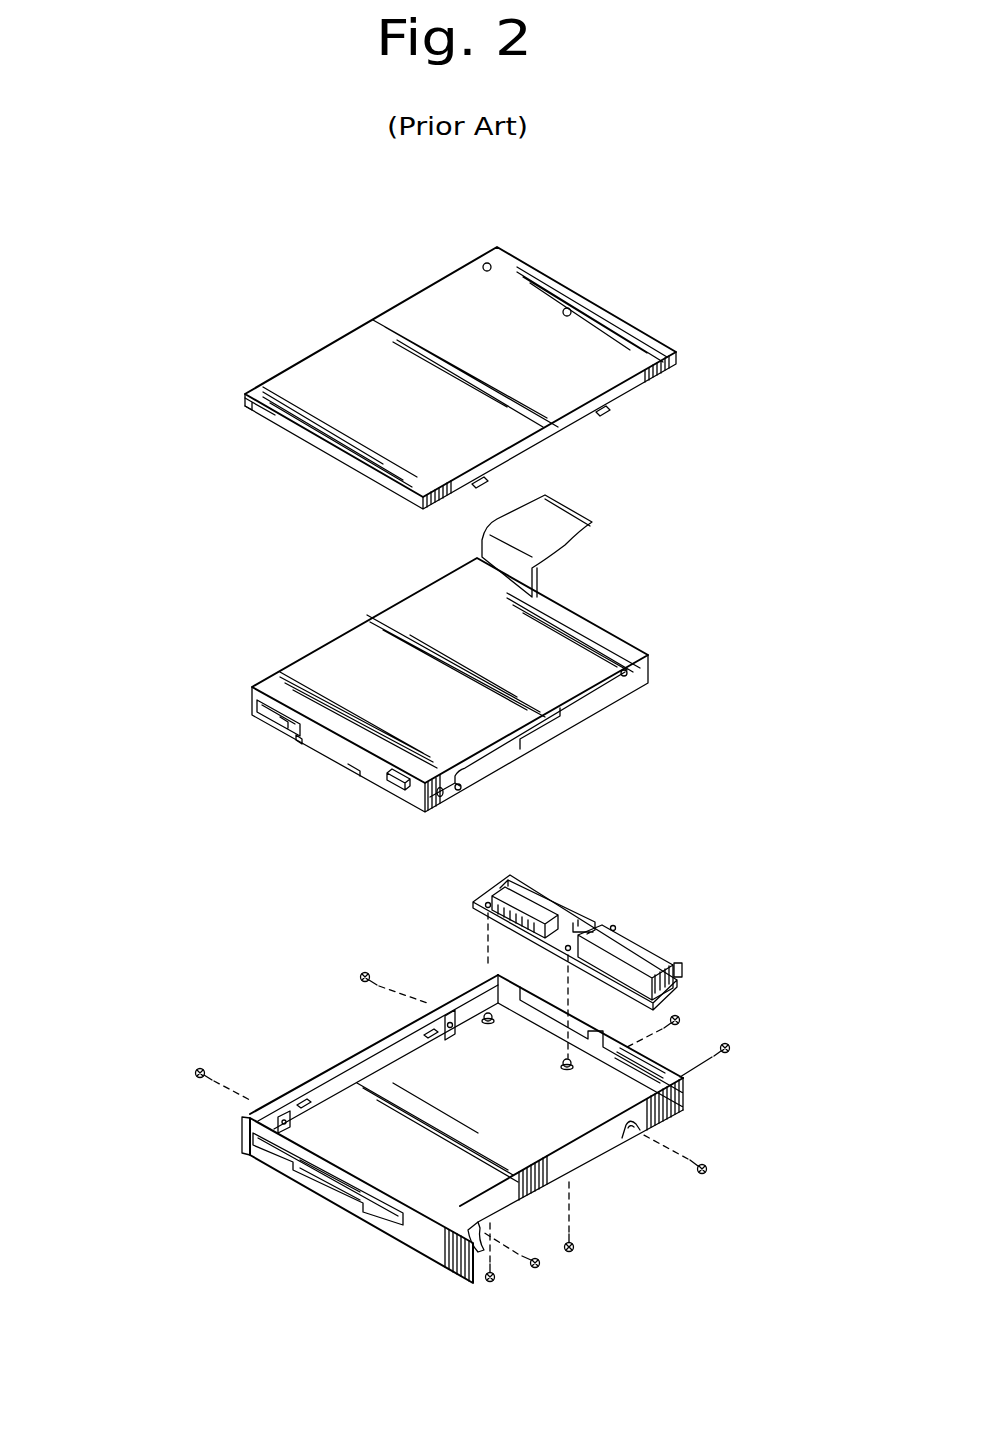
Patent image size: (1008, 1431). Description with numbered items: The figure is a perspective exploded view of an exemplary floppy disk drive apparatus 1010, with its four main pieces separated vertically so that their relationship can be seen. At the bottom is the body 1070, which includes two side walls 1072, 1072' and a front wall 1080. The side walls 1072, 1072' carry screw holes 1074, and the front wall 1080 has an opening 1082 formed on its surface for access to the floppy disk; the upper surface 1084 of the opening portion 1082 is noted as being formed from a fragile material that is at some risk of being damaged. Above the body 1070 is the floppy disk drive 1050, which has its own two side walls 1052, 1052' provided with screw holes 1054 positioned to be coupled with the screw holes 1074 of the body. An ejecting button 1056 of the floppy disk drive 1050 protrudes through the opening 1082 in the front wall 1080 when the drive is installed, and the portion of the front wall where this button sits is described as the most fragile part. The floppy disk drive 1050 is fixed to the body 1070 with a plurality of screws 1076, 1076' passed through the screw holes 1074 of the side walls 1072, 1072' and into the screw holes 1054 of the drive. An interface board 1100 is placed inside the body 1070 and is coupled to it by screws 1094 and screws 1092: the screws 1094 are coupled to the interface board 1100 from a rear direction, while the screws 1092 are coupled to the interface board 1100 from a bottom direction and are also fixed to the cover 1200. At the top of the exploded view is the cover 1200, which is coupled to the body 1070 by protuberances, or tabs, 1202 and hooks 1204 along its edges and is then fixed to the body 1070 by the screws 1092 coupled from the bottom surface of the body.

The floppy disk drive apparatus 1010 is at (392, 218).
The cover 1200 is at (322, 338).
The protuberances, or tabs 1202 is at (258, 410).
The hooks 1204 is at (603, 415).
The floppy disk drive 1050 is at (313, 630).
The side wall of floppy disk drive 1052' is at (450, 662).
The side wall of floppy disk drive 1052 is at (607, 722).
The ejecting button 1056 is at (353, 770).
The screw holes of floppy disk drive 1054 is at (461, 791).
The interface board 1100 is at (648, 906).
The body 1070 is at (226, 1141).
The side wall of body 1072' is at (374, 1054).
The side wall of body 1072 is at (576, 1165).
The screw holes of body side walls 1074 is at (640, 1128).
The screw 1076' is at (198, 1037).
The screws 1076 is at (732, 1176).
The front wall 1080 is at (432, 1243).
The opening 1082 is at (312, 1172).
The upper surface of opening portion 1084 is at (345, 1175).
The screws 1092 is at (575, 1245).
The screws 1094 is at (732, 1053).